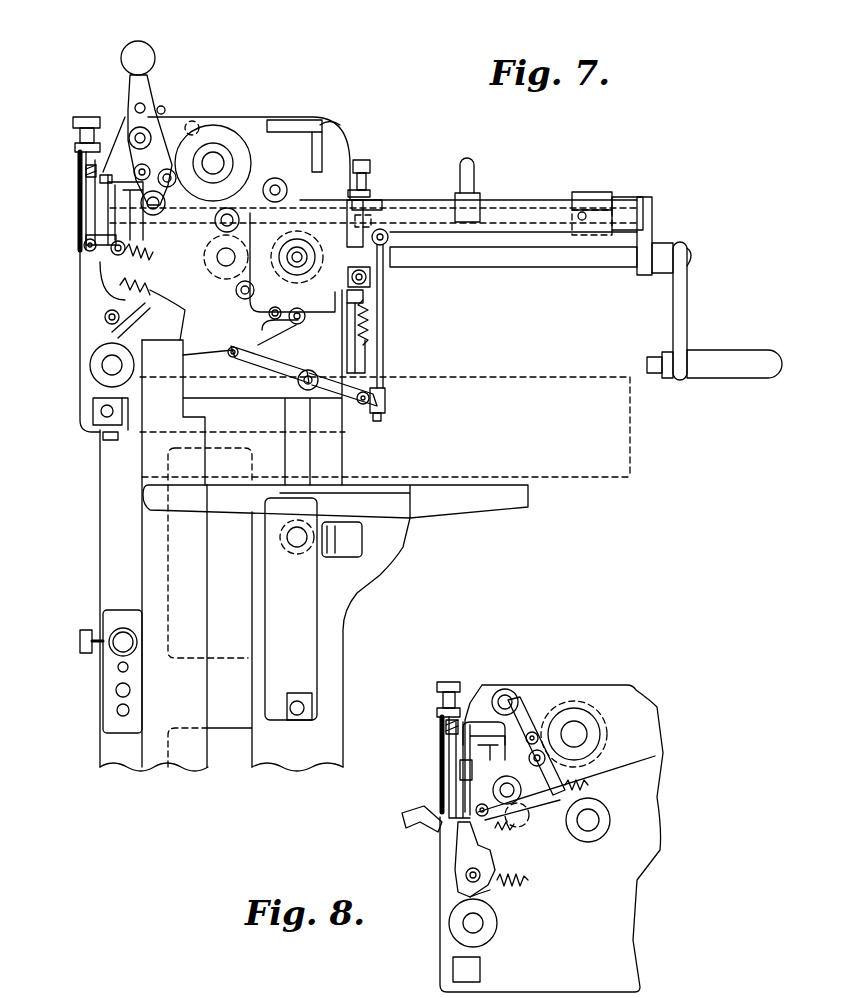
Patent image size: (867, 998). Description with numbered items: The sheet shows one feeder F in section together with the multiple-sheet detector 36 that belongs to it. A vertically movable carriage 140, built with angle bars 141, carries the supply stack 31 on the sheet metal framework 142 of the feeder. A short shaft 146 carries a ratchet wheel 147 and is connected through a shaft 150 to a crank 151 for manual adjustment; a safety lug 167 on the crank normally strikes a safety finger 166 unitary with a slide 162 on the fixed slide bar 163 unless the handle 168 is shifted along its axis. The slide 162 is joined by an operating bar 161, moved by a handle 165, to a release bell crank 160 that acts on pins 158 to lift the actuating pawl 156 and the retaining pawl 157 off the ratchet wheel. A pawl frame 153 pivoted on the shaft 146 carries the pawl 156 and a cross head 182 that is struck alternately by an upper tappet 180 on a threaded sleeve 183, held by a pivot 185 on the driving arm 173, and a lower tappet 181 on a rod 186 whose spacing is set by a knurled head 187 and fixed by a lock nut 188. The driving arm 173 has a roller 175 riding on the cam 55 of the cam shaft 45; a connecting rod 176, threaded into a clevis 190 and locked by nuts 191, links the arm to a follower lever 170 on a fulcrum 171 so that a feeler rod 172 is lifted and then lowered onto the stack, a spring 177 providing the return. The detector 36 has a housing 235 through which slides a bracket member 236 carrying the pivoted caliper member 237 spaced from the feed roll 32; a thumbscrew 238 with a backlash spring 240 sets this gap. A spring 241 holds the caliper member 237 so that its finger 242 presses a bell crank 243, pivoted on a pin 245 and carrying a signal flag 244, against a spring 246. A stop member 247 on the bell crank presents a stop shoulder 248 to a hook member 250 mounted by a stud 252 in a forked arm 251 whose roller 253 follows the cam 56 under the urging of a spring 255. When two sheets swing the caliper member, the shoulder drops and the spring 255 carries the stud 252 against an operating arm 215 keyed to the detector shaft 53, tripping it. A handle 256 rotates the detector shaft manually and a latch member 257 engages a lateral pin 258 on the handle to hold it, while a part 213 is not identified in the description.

In FIG. 7, the feeder F is at (332, 104).
In FIG. 7, the handle 256 is at (130, 76).
In FIG. 7, the lateral pin 258 is at (142, 110).
In FIG. 7, the latch member 257 is at (150, 113).
In FIG. 7, the operating arm 215 is at (137, 170).
In FIG. 8, the operating arm 215 is at (540, 730).
In FIG. 7, the cam shaft 45 is at (215, 162).
In FIG. 7, the cam 55 is at (236, 182).
In FIG. 7, the roller 253 is at (312, 128).
In FIG. 8, the roller 253 is at (592, 760).
In FIG. 7, the roller 175 is at (312, 140).
In FIG. 7, the knurled head 187 is at (363, 160).
In FIG. 7, the lock nut 188 is at (368, 195).
In FIG. 7, the operating bar 161 is at (425, 215).
In FIG. 7, the handle 165 is at (473, 177).
In FIG. 7, the fixed slide bar 163 is at (535, 200).
In FIG. 7, the slide 162 is at (592, 192).
In FIG. 7, the safety finger 166 is at (624, 195).
In FIG. 7, the short shaft 146 is at (372, 204).
In FIG. 7, the pivot 185 is at (368, 218).
In FIG. 7, the driving arm 173 is at (345, 212).
In FIG. 7, the release bell crank 160 is at (283, 186).
In FIG. 7, the internally threaded sleeve 183 is at (371, 219).
In FIG. 7, the pawl frame 153 is at (389, 239).
In FIG. 7, the upper tappet 180 is at (372, 266).
In FIG. 7, the cross head 182 is at (330, 282).
In FIG. 7, the short rod 186 is at (364, 298).
In FIG. 7, the tappet 181 is at (366, 305).
In FIG. 7, the connecting rod 176 is at (356, 341).
In FIG. 7, the spring 177 is at (366, 354).
In FIG. 7, the ratchet wheel 147 is at (298, 324).
In FIG. 7, the actuating pawl 156 is at (296, 330).
In FIG. 7, the forked arm 251 is at (223, 255).
In FIG. 8, the forked arm 251 is at (560, 788).
In FIG. 7, the spring 255 is at (240, 298).
In FIG. 8, the spring 255 is at (590, 785).
In FIG. 7, the retaining pawl 157 is at (270, 315).
In FIG. 7, the spring 246 is at (186, 317).
In FIG. 8, the spring 246 is at (508, 832).
In FIG. 7, the laterally extending pin 158 is at (265, 330).
In FIG. 7, the spring 241 is at (208, 351).
In FIG. 8, the spring 241 is at (530, 880).
In FIG. 7, the feeler rod 172 is at (222, 365).
In FIG. 7, the fulcrum 171 is at (290, 380).
In FIG. 7, the follower lever 170 is at (310, 390).
In FIG. 7, the lock nut 191 is at (385, 392).
In FIG. 7, the clevis 190 is at (386, 402).
In FIG. 7, the shaft 150 is at (527, 256).
In FIG. 7, the crank 151 is at (688, 304).
In FIG. 7, the safety lug 167 is at (655, 358).
In FIG. 7, the handle 168 is at (748, 374).
In FIG. 7, the supply stack 31 is at (631, 428).
In FIG. 7, the carriage 140 is at (538, 511).
In FIG. 7, the angle bar 141 is at (436, 510).
In FIG. 7, the framework 142 is at (362, 640).
In FIG. 7, the stud 252 is at (100, 185).
In FIG. 8, the stud 252 is at (533, 730).
In FIG. 7, the detector 36 is at (64, 193).
In FIG. 8, the detector 36 is at (430, 787).
In FIG. 7, the stop member 247 is at (78, 212).
In FIG. 8, the stop member 247 is at (452, 752).
In FIG. 7, the housing 235 is at (76, 226).
In FIG. 8, the housing 235 is at (448, 773).
In FIG. 7, the signal flag 244 is at (85, 247).
In FIG. 7, the pin 245 is at (113, 250).
In FIG. 8, the pin 245 is at (500, 806).
In FIG. 7, the bell crank 243 is at (120, 262).
In FIG. 7, the finger 242 is at (118, 283).
In FIG. 8, the finger 242 is at (492, 862).
In FIG. 7, the bracket member 236 is at (110, 302).
In FIG. 8, the bracket member 236 is at (460, 868).
In FIG. 7, the caliper member 237 is at (108, 322).
In FIG. 8, the caliper member 237 is at (495, 888).
In FIG. 7, the feed roll 32 is at (90, 366).
In FIG. 8, the feed roll 32 is at (498, 928).
In FIG. 7, the thumbscrew 238 is at (78, 117).
In FIG. 8, the thumbscrew 238 is at (449, 682).
In FIG. 7, the stop shoulder 248 is at (107, 170).
In FIG. 8, the stop shoulder 248 is at (447, 736).
In FIG. 8, the detector shaft 53 is at (509, 698).
In FIG. 8, the cam 56 is at (600, 712).
In FIG. 8, the hook member 250 is at (481, 724).
In FIG. 8, the spring 240 is at (447, 722).
In FIG. 8, the finger 213 is at (470, 830).